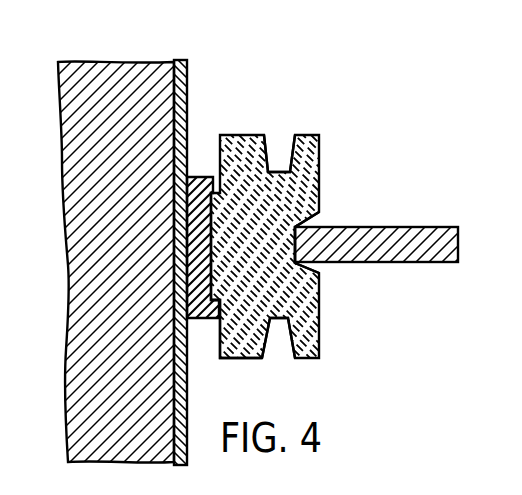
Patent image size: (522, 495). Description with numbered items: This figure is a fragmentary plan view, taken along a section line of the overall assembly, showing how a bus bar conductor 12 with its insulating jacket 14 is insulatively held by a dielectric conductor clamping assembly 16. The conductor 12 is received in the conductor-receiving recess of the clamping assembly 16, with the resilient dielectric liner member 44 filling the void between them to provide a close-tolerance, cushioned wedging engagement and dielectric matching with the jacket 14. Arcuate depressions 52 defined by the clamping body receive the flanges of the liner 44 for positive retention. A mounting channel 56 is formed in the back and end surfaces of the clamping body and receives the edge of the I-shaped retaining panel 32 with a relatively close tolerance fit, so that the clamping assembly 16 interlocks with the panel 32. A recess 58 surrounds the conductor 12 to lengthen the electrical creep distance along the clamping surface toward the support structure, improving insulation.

The bus bar conductor 12 is at (129, 73).
The insulating jacket 14 is at (187, 93).
The dielectric conductor clamping assembly 16 is at (321, 150).
The I-shaped retaining panel 32 is at (355, 227).
The resilient dielectric liner member 44 is at (202, 177).
The arcuate depression 52 is at (222, 347).
The mounting channel 56 is at (332, 266).
The recess 58 is at (272, 152).